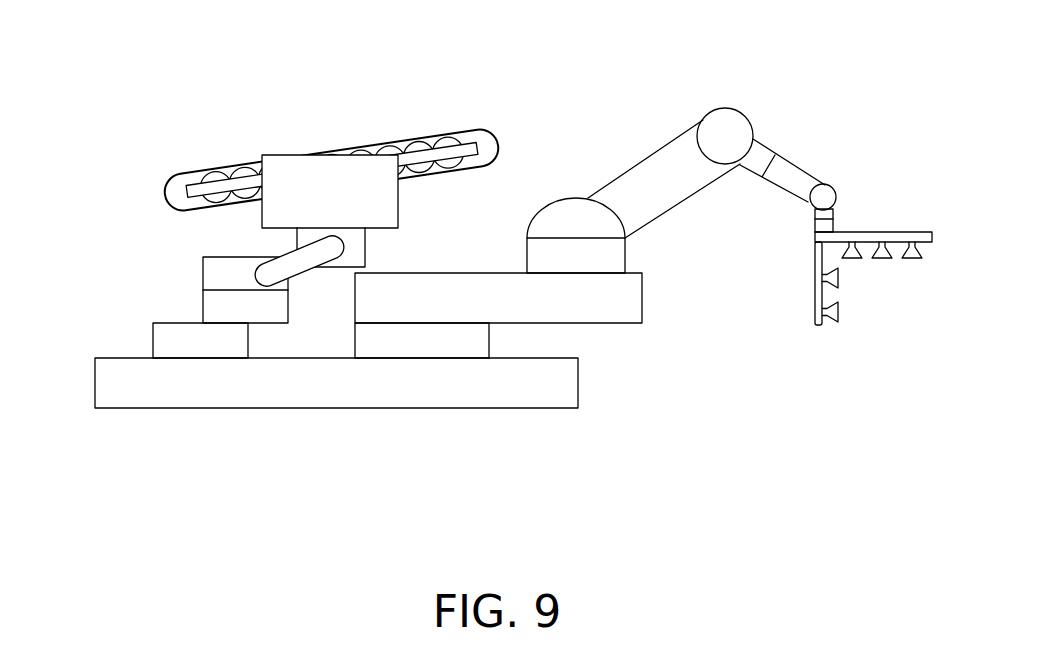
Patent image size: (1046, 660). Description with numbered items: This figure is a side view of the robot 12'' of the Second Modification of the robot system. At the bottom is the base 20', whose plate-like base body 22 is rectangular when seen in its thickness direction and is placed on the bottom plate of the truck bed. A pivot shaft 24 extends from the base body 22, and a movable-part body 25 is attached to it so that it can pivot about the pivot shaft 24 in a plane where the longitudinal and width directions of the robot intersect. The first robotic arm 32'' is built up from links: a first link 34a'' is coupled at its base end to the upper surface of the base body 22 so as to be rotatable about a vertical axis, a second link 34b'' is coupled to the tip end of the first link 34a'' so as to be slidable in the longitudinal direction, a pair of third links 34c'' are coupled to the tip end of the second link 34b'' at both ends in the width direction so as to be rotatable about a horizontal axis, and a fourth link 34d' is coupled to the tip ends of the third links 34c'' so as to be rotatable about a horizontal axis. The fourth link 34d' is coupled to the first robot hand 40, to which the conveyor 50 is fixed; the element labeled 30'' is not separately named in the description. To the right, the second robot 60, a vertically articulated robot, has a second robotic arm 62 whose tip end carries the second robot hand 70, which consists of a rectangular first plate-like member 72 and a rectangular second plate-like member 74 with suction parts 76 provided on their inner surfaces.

The robot 12'' is at (78, 46).
The transfer device 30'' is at (92, 138).
The first robot hand 40 is at (186, 146).
The conveyor 50 is at (307, 142).
The second robot 60 is at (571, 118).
The second robotic arm 62 is at (658, 150).
The second robot hand 70 is at (908, 195).
The first plate-like member 72 is at (862, 231).
The second plate-like member 74 is at (812, 303).
The suction parts 76 is at (858, 258).
The base 20' is at (66, 305).
The base body 22 is at (523, 390).
The pivot shaft 24 is at (477, 338).
The movable-part body 25 is at (633, 303).
The first robotic arm 32'' is at (147, 288).
The first link 34a'' is at (198, 430).
The second link 34b'' is at (248, 397).
The third links 34c'' is at (314, 386).
The fourth link 34d' is at (376, 382).